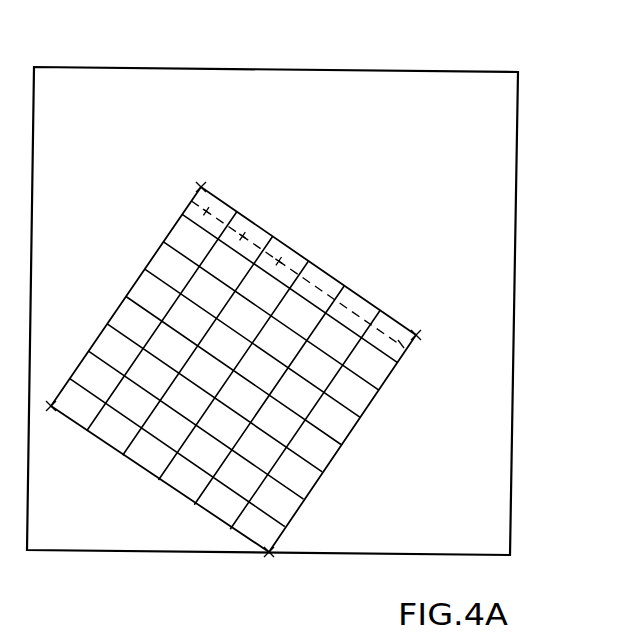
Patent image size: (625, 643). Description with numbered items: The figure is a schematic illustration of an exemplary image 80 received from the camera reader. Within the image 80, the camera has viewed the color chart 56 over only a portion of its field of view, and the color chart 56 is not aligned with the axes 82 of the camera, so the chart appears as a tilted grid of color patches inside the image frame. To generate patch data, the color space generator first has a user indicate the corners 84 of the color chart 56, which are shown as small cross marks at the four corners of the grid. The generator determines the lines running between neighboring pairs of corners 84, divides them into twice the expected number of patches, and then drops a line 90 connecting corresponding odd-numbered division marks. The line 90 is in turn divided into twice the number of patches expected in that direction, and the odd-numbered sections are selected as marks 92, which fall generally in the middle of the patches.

The image 80 is at (321, 289).
The axes of camera 82 is at (462, 72).
The color chart 56 is at (347, 243).
The corners of color chart 84 is at (200, 187).
The marks 92 is at (210, 212).
The line 90 is at (402, 348).